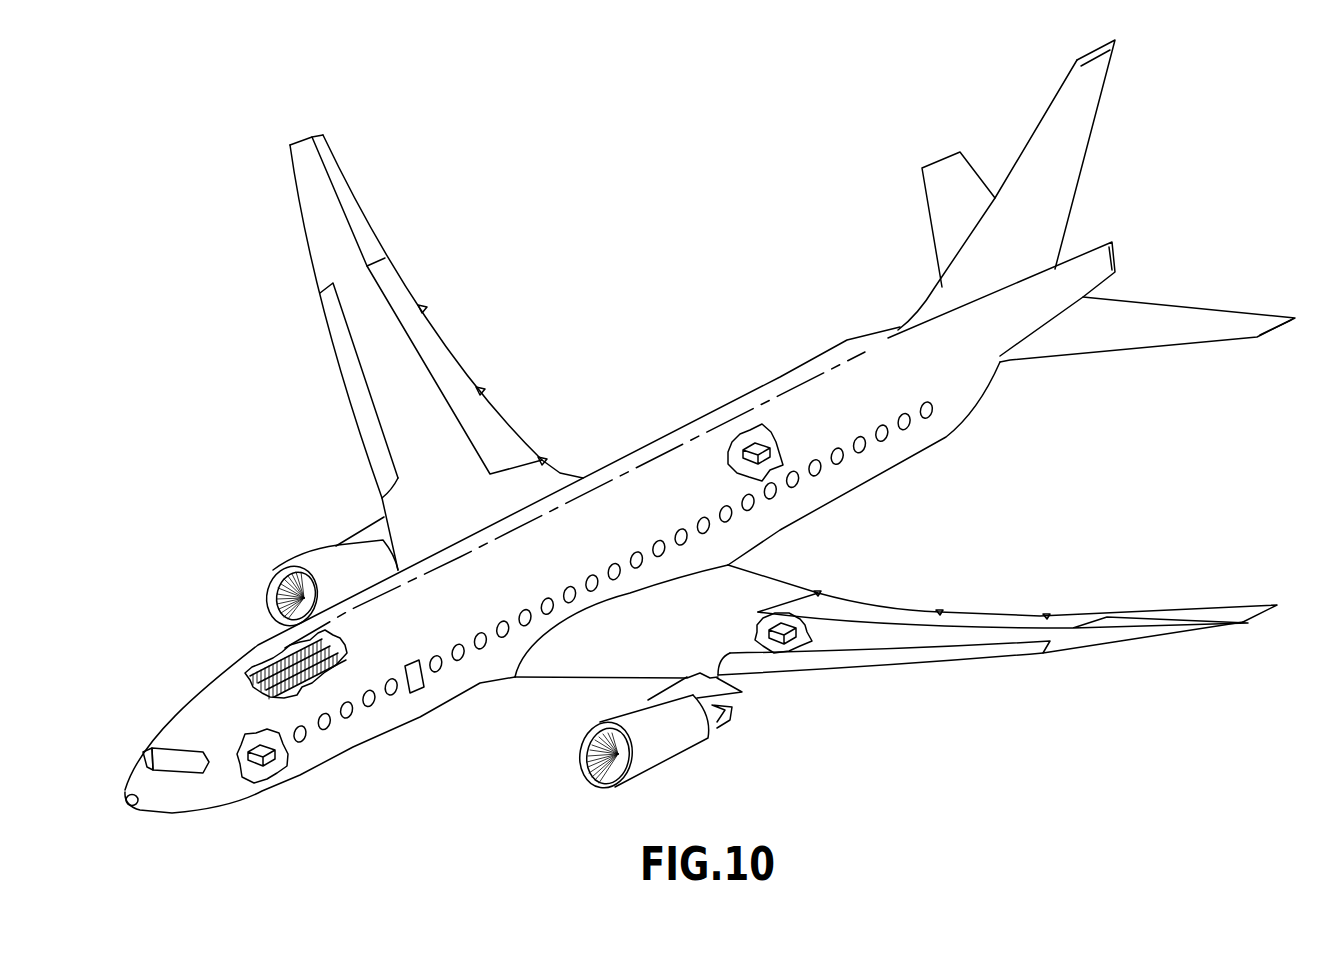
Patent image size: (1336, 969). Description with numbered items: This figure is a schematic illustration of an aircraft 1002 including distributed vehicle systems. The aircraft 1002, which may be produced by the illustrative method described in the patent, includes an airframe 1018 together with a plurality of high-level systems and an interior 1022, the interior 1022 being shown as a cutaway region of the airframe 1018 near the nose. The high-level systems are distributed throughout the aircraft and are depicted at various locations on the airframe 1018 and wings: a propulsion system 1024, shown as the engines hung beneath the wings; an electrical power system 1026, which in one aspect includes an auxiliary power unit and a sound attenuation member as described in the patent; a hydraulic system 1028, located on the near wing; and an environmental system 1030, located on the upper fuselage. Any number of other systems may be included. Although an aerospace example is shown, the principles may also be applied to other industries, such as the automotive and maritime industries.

The aircraft 1002 is at (257, 345).
The airframe 1018 is at (257, 637).
The interior 1022 is at (301, 695).
The propulsion system 1024 is at (316, 559).
The electrical power system 1026 is at (257, 742).
The hydraulic system 1028 is at (788, 622).
The environmental system 1030 is at (748, 450).